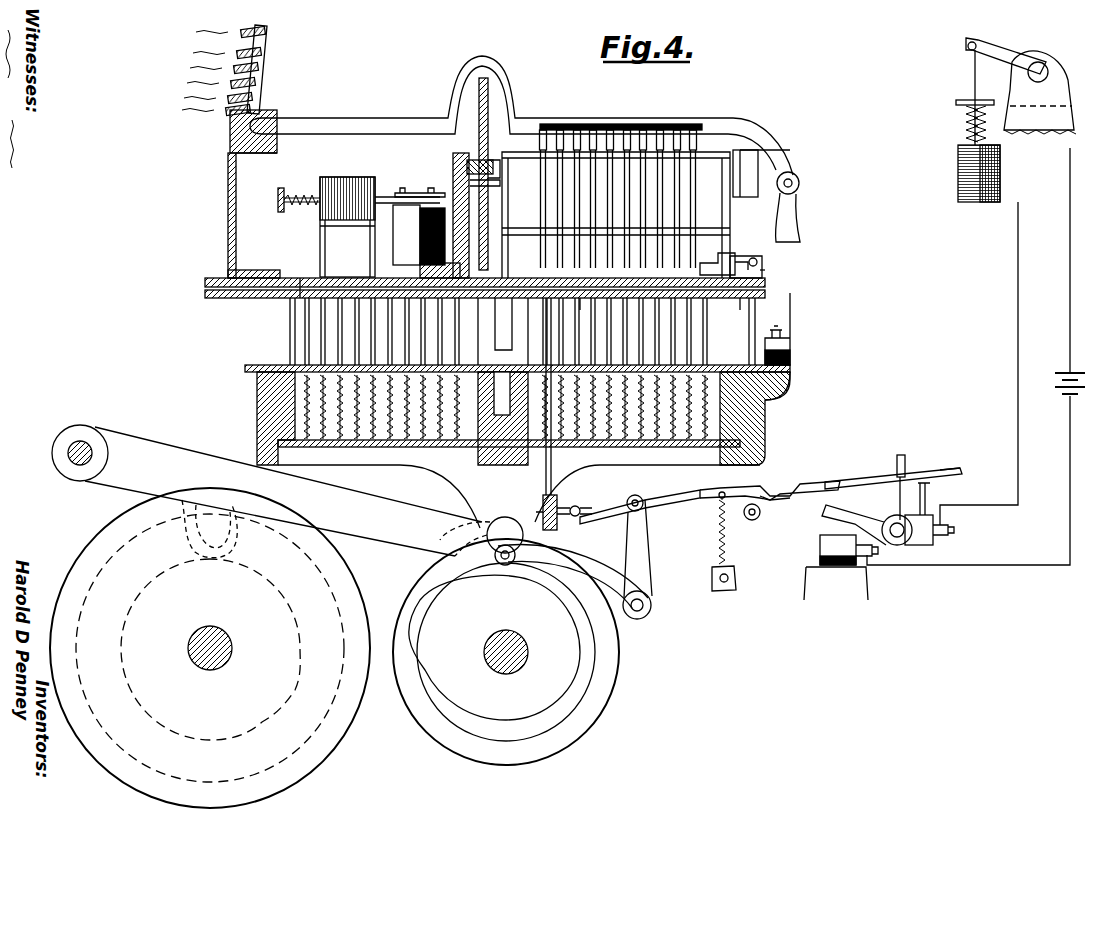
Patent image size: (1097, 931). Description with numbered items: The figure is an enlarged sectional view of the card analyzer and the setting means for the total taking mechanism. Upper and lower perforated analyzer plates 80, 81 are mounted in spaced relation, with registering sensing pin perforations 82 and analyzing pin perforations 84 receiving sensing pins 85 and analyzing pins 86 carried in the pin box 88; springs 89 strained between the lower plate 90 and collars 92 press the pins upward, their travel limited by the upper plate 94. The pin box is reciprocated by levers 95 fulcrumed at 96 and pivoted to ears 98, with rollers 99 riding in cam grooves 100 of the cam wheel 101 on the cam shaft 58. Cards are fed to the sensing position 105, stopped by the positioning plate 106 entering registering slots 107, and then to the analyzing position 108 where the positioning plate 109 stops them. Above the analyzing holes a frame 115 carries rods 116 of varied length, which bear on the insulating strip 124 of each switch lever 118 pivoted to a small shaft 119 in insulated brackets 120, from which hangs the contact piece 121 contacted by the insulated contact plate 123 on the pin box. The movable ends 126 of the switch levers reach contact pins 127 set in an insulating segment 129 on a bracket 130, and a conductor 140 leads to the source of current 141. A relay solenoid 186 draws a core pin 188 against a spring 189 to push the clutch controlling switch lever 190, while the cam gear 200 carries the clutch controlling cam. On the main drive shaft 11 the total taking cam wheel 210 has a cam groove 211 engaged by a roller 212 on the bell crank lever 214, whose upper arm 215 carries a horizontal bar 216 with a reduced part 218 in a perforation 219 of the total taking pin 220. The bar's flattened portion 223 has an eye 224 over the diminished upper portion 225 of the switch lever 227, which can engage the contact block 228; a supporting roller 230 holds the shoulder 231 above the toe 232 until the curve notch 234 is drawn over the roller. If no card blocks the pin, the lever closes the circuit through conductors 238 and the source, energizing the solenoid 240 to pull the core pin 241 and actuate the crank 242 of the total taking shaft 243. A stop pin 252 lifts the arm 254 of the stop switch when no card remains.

The main drive shaft 11 is at (528, 658).
The cam shaft 58 is at (214, 627).
The upper perforated analyzer plate 80 is at (207, 280).
The lower perforated analyzer plate 81 is at (207, 297).
The sensing pin perforations 82 is at (310, 296).
The analyzing pin perforations 84 is at (580, 297).
The sensing pins 85 is at (322, 336).
The analyzing pins 86 is at (680, 345).
The pin box 88 is at (762, 415).
The springs 89 is at (300, 425).
The lower plate of the pin box 90 is at (463, 448).
The collars 92 is at (306, 366).
The upper plate of the pin box 94 is at (520, 372).
The levers 95 is at (148, 446).
The fulcrum 96 is at (84, 444).
The ears 98 is at (486, 530).
The intermediate rollers 99 is at (232, 556).
The cam grooves 100 is at (290, 656).
The cam wheel 101 is at (340, 725).
The sensing position 105 is at (340, 299).
The positioning plate 106 is at (508, 318).
The registering slots 107 is at (495, 300).
The analyzing position 108 is at (632, 288).
The positioning plate 109 is at (756, 316).
The frame 115 is at (742, 158).
The rods 116 is at (692, 176).
The switch lever 118 is at (520, 122).
The small shaft 119 is at (800, 183).
The insulated brackets 120 is at (757, 190).
The circuit closing contact piece 121 is at (796, 214).
The circuit closing contact plate 123 is at (792, 326).
The insulating strip 124 is at (640, 124).
The movable ends 126 is at (267, 126).
The contact pins 127 is at (255, 90).
The segment 129 is at (228, 126).
The bracket 130 is at (229, 208).
The conductor 140 is at (766, 270).
The source of current 141 is at (1056, 380).
The relay solenoid 186 is at (345, 177).
The core pin 188 is at (288, 212).
The spring 189 is at (296, 194).
The clutch controlling switch lever 190 is at (398, 196).
The cam gear 200 is at (478, 142).
The total taking cam wheel 210 is at (620, 674).
The cam groove 211 is at (576, 718).
The roller 212 is at (496, 560).
The bell crank lever 214 is at (572, 586).
The upper arm 215 is at (644, 560).
The horizontal bar 216 is at (708, 530).
The reduced part 218 is at (570, 506).
The perforation 219 is at (558, 525).
The total taking pin 220 is at (546, 476).
The flattened portion 223 is at (838, 484).
The eye 224 is at (935, 470).
The diminished upper portion 225 is at (901, 455).
The switch lever 227 is at (900, 496).
The contact block 228 is at (828, 548).
The supporting roller 230 is at (752, 521).
The shoulder 231 is at (962, 470).
The toe 232 is at (926, 490).
The curve notch 234 is at (772, 500).
The conductors 238 is at (1019, 324).
The solenoid 240 is at (956, 200).
The core pin 241 is at (966, 136).
The crank 242 is at (1005, 50).
The total taking shaft 243 is at (1038, 80).
The stop pin 252 is at (740, 312).
The arm 254 is at (736, 256).